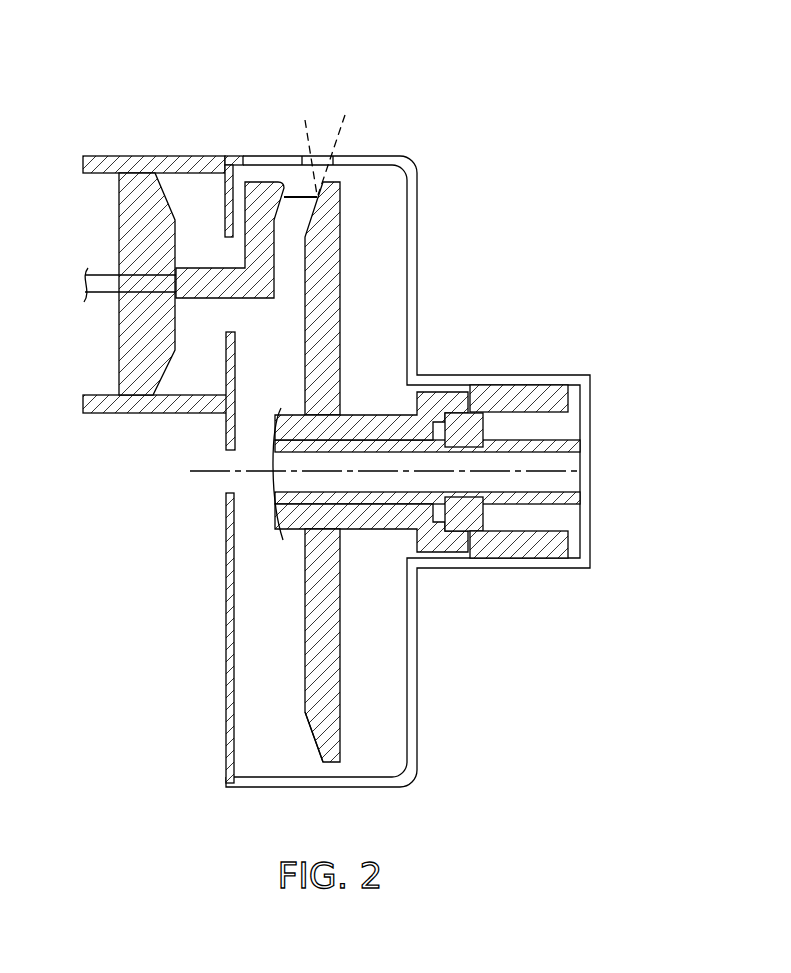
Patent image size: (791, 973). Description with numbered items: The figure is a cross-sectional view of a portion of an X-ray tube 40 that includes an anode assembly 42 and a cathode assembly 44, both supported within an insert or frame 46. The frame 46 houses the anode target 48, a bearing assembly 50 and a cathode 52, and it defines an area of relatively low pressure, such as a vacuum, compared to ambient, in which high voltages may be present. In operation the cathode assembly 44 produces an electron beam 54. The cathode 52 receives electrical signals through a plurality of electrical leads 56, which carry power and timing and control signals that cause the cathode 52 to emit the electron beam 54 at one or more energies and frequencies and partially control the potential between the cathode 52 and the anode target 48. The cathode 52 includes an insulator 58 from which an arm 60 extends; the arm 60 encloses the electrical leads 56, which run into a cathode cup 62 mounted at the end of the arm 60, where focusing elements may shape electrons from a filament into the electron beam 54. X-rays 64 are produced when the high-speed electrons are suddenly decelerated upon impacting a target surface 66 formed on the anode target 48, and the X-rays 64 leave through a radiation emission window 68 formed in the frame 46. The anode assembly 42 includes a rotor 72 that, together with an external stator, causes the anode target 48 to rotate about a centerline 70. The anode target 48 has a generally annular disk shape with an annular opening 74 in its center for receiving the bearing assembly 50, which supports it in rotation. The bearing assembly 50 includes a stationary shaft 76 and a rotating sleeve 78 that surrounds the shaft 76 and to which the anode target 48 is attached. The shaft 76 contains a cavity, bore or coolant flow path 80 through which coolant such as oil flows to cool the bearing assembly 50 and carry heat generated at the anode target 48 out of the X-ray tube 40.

The X-ray tube 40 is at (510, 58).
The anode assembly 42 is at (425, 156).
The cathode assembly 44 is at (186, 132).
The frame 46 is at (247, 790).
The anode target 48 is at (330, 312).
The bearing assembly 50 is at (492, 512).
The cathode 52 is at (233, 240).
The electron beam 54 is at (290, 208).
The electrical leads 56 is at (88, 300).
The insulator 58 is at (118, 200).
The arm 60 is at (258, 300).
The cathode cup 62 is at (268, 172).
The X-rays 64 is at (355, 128).
The target surface 66 is at (300, 742).
The radiation emission window 68 is at (340, 165).
The centerline 70 is at (260, 468).
The rotor 72 is at (522, 380).
The annular opening 74 is at (296, 405).
The shaft 76 is at (560, 492).
The sleeve 78 is at (380, 530).
The coolant flow path 80 is at (590, 469).